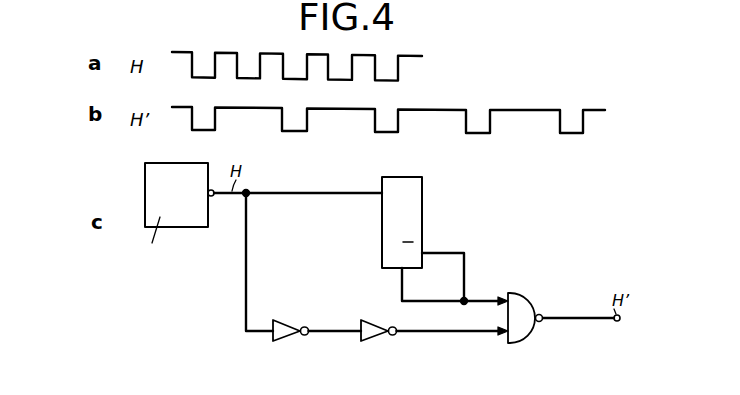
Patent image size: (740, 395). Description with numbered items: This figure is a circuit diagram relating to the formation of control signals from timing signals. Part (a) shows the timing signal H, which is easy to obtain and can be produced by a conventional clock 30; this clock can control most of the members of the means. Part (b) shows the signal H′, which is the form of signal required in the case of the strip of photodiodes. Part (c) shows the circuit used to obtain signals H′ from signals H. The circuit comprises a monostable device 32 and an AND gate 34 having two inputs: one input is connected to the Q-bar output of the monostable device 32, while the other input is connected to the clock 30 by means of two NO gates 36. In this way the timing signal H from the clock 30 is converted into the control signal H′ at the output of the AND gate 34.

The clock 30 is at (173, 215).
The monostable device 32 is at (457, 189).
The AND gate 34 is at (518, 294).
The NO gates 36 is at (358, 320).